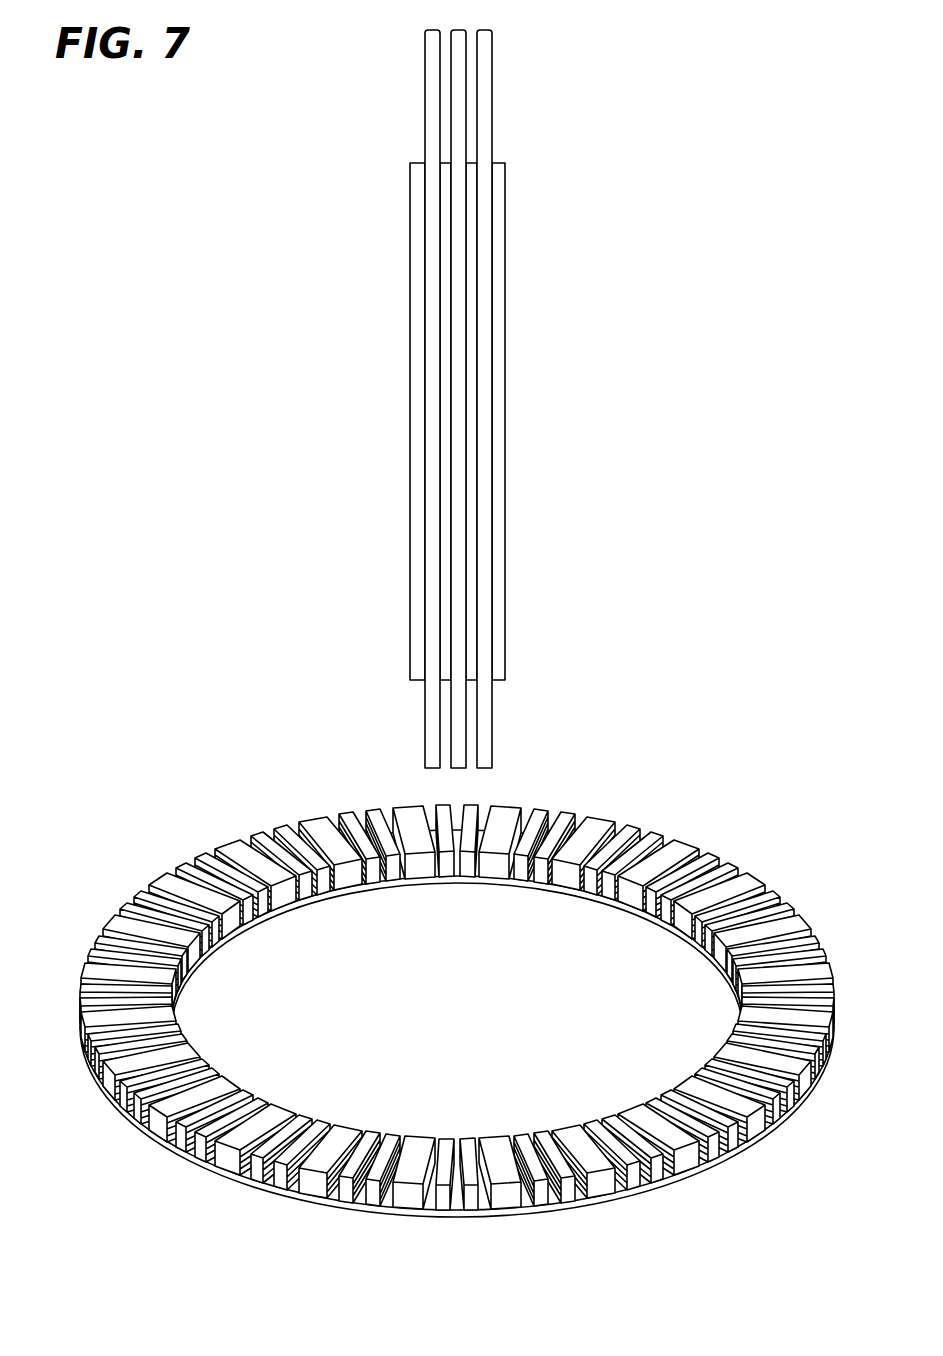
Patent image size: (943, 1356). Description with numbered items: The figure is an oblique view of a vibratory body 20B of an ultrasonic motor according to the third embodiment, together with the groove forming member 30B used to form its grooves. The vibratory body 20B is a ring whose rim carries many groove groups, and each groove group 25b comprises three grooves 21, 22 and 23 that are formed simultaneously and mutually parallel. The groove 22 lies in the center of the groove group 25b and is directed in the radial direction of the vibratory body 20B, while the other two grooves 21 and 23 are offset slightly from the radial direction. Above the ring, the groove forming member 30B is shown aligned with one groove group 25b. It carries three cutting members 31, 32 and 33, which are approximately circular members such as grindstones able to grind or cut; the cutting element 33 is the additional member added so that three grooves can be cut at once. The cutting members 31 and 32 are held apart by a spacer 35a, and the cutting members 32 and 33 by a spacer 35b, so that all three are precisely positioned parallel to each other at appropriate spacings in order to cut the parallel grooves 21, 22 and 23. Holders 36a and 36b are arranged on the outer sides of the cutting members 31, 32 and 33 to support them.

The vibratory body 20B is at (188, 1188).
The groove 21 is at (431, 852).
The groove 22 is at (459, 855).
The groove 23 is at (485, 855).
The groove group 25b is at (540, 945).
The groove forming member 30B is at (456, 406).
The cutting member 31 is at (422, 724).
The cutting member 32 is at (457, 770).
The cutting element 33 is at (494, 734).
The spacer 35a is at (440, 318).
The spacer 35b is at (470, 305).
The holder 36a is at (415, 244).
The holder 36b is at (498, 234).